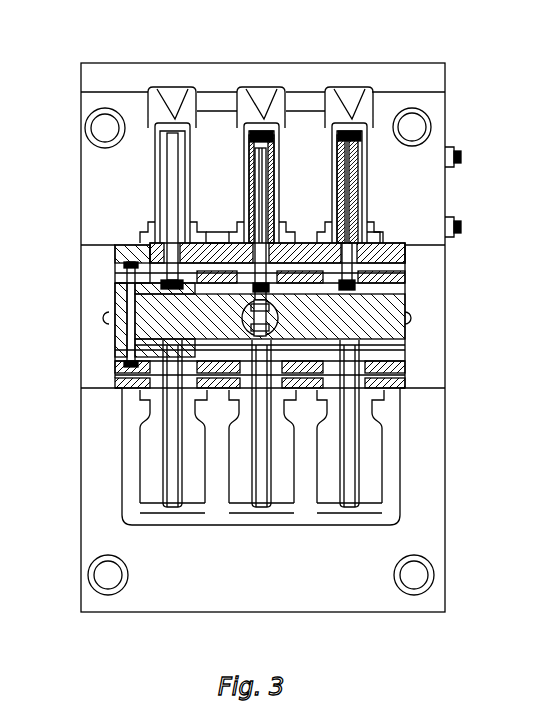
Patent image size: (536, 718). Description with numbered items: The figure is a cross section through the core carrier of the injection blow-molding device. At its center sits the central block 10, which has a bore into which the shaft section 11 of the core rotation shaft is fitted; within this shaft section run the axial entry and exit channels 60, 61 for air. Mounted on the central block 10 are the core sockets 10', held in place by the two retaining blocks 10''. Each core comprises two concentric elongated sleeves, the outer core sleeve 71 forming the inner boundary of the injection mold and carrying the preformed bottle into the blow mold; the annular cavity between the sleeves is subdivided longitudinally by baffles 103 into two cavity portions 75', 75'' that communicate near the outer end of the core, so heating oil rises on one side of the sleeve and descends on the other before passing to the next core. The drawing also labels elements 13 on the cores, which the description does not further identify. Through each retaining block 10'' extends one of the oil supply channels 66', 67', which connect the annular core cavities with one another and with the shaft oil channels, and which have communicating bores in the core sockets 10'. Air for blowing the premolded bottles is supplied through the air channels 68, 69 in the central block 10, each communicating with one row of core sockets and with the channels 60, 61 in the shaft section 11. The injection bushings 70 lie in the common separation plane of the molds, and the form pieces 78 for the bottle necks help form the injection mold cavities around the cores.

The injection bushing 70 is at (258, 100).
The outer core sleeve 71 is at (172, 164).
The connecting channel 67' is at (87, 275).
The hydraulic cylinder 13 is at (185, 182).
The cavity portion 75'' is at (239, 187).
The cavity portion 75' is at (296, 189).
The baffle 103 is at (258, 220).
The retaining block 10'' is at (219, 221).
The form piece 78 is at (367, 237).
The air channel 69 is at (383, 287).
The central block 10 is at (301, 315).
The shaft section 11 is at (407, 336).
The air channel 68 is at (407, 352).
The core socket 10' is at (215, 272).
The axial channel 61 is at (255, 308).
The axial channel 60 is at (252, 323).
The connecting channel 66' is at (211, 443).